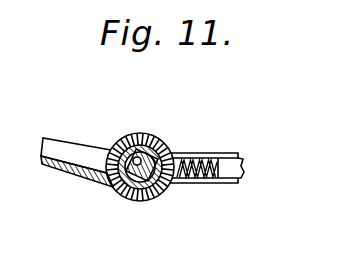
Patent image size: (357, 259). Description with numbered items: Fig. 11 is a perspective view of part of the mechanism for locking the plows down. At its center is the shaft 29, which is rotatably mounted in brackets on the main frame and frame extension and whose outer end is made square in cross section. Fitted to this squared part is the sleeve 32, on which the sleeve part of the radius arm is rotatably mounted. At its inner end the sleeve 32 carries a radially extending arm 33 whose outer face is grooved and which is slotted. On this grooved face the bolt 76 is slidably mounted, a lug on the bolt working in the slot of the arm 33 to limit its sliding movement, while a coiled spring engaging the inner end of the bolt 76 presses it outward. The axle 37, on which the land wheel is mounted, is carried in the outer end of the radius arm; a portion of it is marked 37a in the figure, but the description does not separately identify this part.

The shaft 29 is at (151, 157).
The sleeve 32 is at (163, 197).
The radially extending arm 33 is at (211, 184).
The axle 37 is at (60, 147).
The handle wall 37a is at (133, 203).
The bolt 76 is at (234, 168).